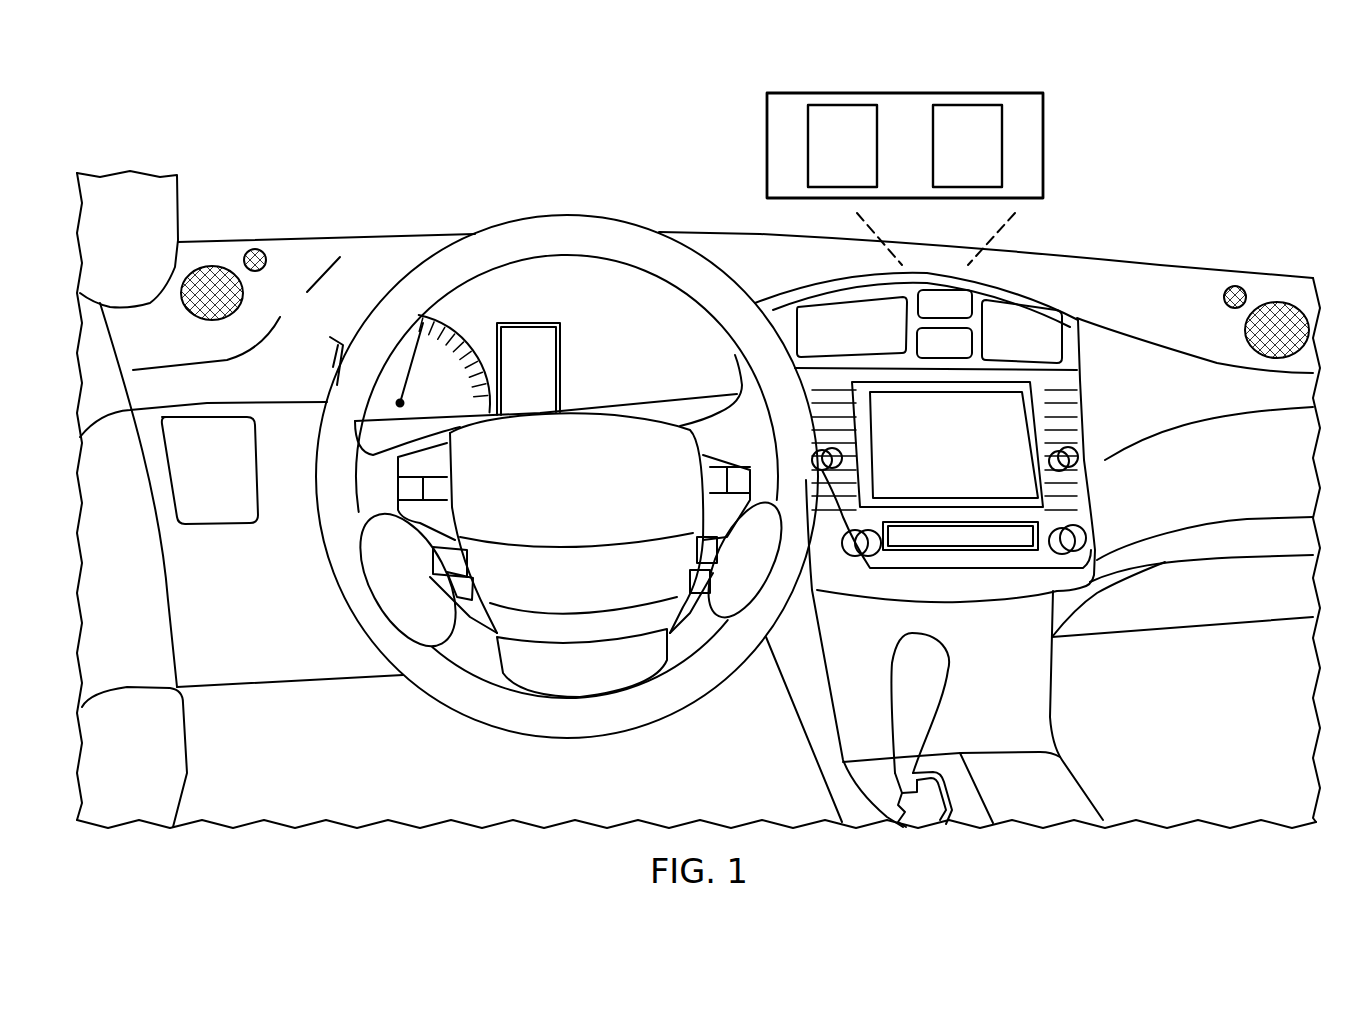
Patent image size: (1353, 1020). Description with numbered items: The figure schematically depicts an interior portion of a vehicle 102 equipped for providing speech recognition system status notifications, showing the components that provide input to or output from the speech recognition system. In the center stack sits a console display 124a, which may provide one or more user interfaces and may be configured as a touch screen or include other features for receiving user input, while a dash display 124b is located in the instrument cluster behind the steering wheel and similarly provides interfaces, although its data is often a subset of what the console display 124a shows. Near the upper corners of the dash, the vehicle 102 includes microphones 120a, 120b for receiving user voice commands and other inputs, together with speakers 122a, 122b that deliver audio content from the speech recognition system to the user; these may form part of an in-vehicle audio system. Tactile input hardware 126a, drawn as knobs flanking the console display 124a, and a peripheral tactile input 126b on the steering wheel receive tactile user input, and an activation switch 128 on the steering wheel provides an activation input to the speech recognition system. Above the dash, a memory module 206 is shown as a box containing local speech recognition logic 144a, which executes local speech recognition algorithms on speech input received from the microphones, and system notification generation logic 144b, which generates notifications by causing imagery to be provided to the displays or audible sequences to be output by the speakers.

The vehicle 102 is at (340, 136).
The microphone 120a is at (257, 250).
The microphone 120b is at (1235, 287).
The speaker 122a is at (213, 267).
The speaker 122b is at (1280, 300).
The console display 124a is at (1013, 417).
The dash display 124b is at (545, 343).
The tactile input hardware 126a is at (842, 458).
The peripheral tactile input 126b is at (433, 461).
The activation switch 128 is at (707, 457).
The local speech recognition logic 144a is at (868, 157).
The system notification generation logic 144b is at (995, 157).
The memory module 206 is at (944, 173).